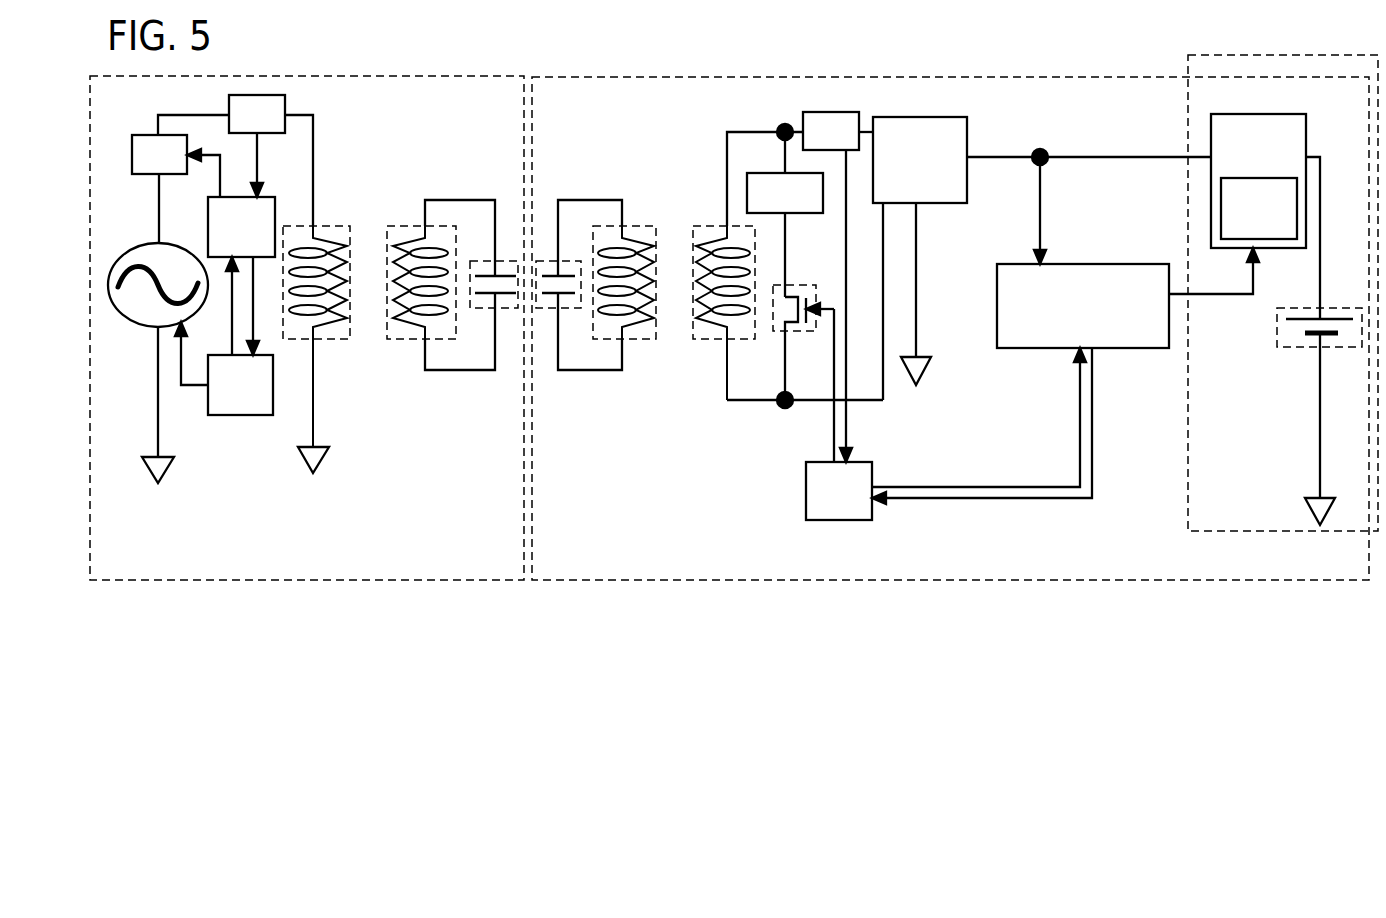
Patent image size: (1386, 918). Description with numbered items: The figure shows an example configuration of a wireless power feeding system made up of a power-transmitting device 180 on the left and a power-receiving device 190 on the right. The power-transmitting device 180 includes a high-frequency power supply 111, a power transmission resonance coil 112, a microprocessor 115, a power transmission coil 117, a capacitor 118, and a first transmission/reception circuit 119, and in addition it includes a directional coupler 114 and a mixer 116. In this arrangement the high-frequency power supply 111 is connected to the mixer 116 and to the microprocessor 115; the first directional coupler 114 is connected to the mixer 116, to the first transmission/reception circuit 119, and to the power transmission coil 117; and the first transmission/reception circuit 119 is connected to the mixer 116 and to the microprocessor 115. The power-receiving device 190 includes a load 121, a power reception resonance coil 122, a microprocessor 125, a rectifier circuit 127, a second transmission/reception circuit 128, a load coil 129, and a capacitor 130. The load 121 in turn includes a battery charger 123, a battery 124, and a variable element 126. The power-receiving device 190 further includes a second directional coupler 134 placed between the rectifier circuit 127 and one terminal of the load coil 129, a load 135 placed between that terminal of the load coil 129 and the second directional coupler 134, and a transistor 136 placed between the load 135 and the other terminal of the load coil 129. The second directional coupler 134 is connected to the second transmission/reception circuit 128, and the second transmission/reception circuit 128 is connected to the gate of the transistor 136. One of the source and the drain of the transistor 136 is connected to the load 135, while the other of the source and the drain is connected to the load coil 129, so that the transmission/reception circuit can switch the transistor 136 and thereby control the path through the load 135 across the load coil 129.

The high-frequency power supply 111 is at (152, 242).
The power transmission resonance coil 112 is at (420, 228).
The directional coupler 114 is at (235, 160).
The microprocessor 115 is at (224, 336).
The mixer 116 is at (159, 189).
The power transmission coil 117 is at (328, 224).
The capacitor 118 is at (478, 340).
The first transmission/reception circuit 119 is at (231, 252).
The load 121 is at (1262, 55).
The power reception resonance coil 122 is at (630, 226).
The battery charger 123 is at (1265, 216).
The battery 124 is at (1296, 348).
The microprocessor 125 is at (1065, 330).
The variable element 126 is at (1259, 208).
The rectifier circuit 127 is at (1042, 258).
The second transmission/reception circuit 128 is at (839, 491).
The load coil 129 is at (722, 226).
The capacitor 130 is at (578, 340).
The second directional coupler 134 is at (838, 287).
The load 135 is at (785, 214).
The transistor 136 is at (793, 333).
The power-transmitting device 180 is at (140, 568).
The power-receiving device 190 is at (581, 568).